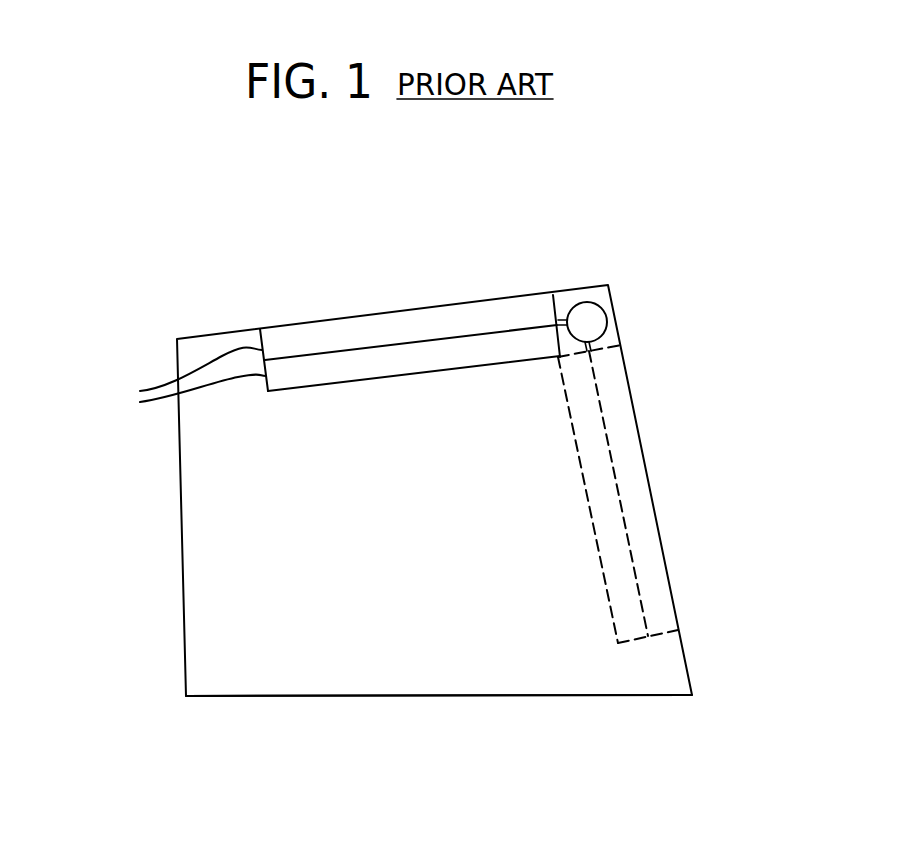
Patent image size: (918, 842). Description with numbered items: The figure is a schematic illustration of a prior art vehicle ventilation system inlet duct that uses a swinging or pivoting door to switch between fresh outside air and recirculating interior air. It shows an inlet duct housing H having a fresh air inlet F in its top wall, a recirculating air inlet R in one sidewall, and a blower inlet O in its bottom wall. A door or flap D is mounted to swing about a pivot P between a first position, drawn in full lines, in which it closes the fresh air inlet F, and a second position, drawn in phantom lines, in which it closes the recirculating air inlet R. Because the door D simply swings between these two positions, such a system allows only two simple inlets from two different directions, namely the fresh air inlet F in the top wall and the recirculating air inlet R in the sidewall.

The inlet duct housing H is at (180, 465).
The blower inlet O is at (400, 695).
The fresh air inlet F is at (347, 318).
The door or flap D is at (142, 391).
The pivot P is at (588, 302).
The recirculating air inlet R is at (646, 470).